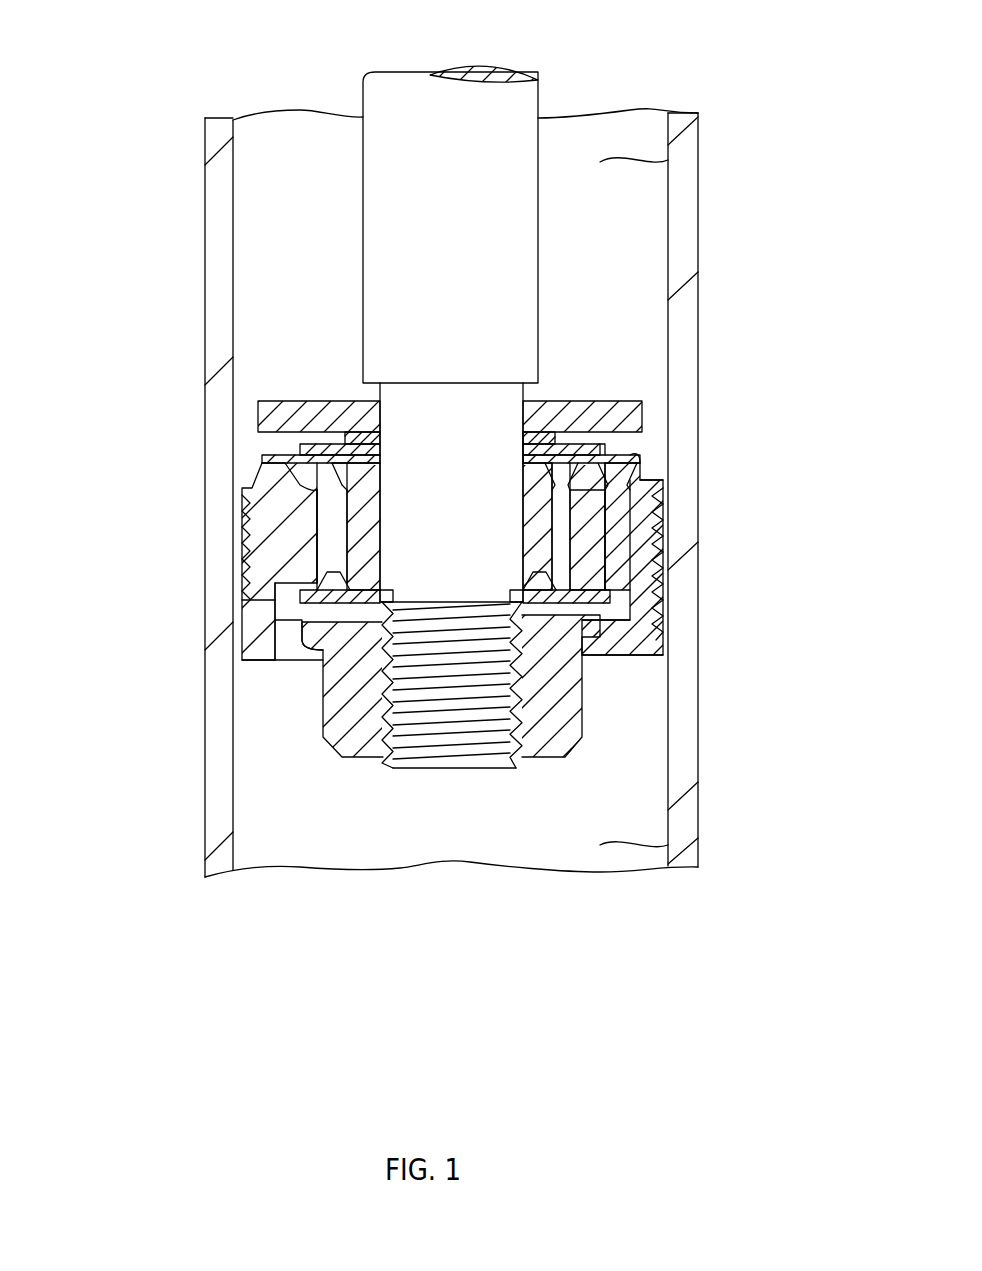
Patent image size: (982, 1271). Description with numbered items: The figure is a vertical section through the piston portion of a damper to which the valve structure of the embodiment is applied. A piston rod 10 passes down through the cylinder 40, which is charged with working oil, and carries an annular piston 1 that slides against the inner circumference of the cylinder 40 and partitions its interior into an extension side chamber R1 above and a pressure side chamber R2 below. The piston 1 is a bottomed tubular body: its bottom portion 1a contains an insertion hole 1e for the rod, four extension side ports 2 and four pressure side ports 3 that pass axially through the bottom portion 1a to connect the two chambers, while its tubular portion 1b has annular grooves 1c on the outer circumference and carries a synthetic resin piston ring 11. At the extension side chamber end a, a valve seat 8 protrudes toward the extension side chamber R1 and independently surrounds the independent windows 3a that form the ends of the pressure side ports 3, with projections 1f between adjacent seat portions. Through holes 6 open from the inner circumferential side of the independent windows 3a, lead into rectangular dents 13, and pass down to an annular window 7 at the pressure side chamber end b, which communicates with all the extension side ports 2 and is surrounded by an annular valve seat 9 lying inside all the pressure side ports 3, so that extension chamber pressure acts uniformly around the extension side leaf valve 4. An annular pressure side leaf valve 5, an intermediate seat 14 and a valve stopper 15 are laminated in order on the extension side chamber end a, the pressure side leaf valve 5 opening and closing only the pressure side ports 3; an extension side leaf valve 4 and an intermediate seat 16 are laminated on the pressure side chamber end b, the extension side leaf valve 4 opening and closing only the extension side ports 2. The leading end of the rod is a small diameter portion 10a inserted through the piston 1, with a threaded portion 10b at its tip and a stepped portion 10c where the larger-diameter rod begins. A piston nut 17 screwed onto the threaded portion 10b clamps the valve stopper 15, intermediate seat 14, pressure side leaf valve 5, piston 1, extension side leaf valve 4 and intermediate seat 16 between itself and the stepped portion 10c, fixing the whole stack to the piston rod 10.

The piston rod 10 is at (542, 86).
The small diameter portion 10a is at (240, 563).
The threaded portion 10b is at (458, 720).
The stepped portion 10c is at (368, 402).
The piston 1 is at (653, 468).
The bottom portion 1a is at (280, 540).
The tubular portion 1b is at (662, 600).
The annular grooves 1c is at (665, 548).
The insertion hole 1e is at (320, 512).
The projections 1f is at (262, 470).
The extension side ports 2 is at (330, 520).
The pressure side ports 3 is at (656, 500).
The independent windows 3a is at (610, 455).
The extension side leaf valve 4 is at (252, 672).
The pressure side leaf valve 5 is at (640, 442).
The through holes 6 is at (617, 518).
The annular window 7 is at (625, 620).
The valve seat 8 is at (641, 450).
The annular valve seat 9 is at (665, 640).
The piston ring 11 is at (245, 627).
The dents 13 is at (566, 445).
The intermediate seat 14 is at (270, 445).
The valve stopper 15 is at (258, 412).
The intermediate seat 16 is at (262, 668).
The piston nut 17 is at (355, 750).
The cylinder 40 is at (698, 752).
The extension side chamber R1 is at (668, 162).
The pressure side chamber R2 is at (620, 843).
The extension side chamber end a is at (535, 430).
The pressure side chamber end b is at (327, 660).